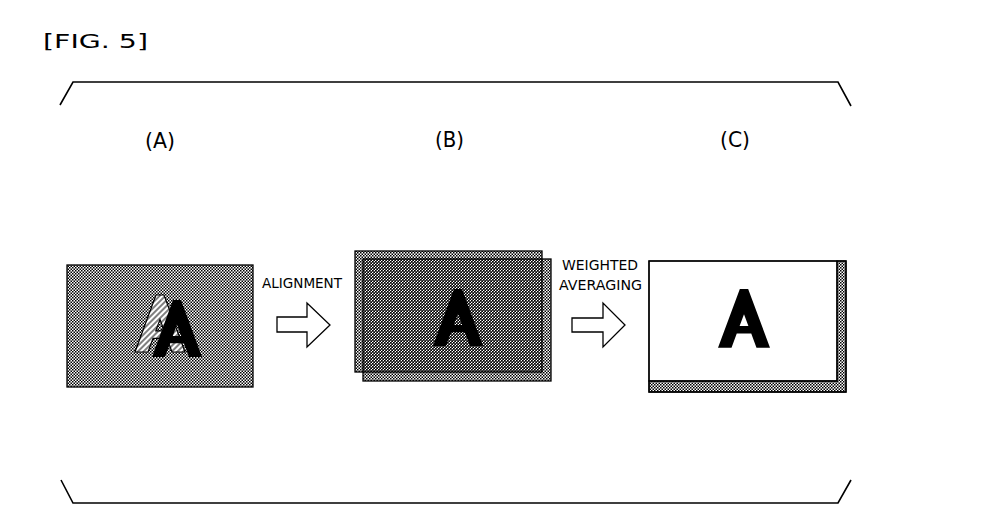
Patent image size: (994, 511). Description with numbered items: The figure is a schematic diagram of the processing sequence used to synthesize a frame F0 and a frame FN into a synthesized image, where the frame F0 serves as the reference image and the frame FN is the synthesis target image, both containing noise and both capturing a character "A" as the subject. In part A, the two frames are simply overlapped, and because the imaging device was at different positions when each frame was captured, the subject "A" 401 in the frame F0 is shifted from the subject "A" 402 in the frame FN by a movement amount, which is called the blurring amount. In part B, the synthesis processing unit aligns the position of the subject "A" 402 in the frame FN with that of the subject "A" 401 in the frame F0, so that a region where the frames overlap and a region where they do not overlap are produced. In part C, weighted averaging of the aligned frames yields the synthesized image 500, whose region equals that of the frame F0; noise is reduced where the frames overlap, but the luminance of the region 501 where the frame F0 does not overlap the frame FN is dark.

The subject "A" in the frame F0 401 is at (145, 297).
The subject "A" in the frame FN 402 is at (190, 308).
The synthesized image 500 is at (797, 260).
The region where the frame F0 does not overlap the frame FN 501 is at (700, 393).
The frame FN is at (385, 210).
The frame F0 is at (445, 384).